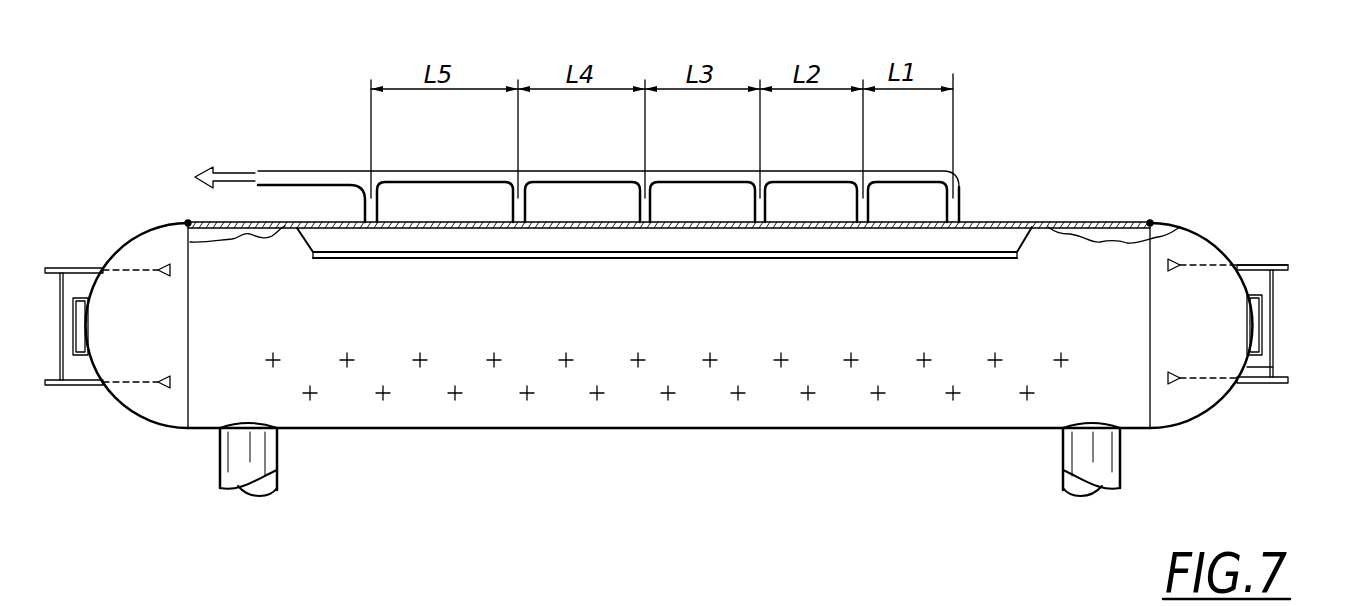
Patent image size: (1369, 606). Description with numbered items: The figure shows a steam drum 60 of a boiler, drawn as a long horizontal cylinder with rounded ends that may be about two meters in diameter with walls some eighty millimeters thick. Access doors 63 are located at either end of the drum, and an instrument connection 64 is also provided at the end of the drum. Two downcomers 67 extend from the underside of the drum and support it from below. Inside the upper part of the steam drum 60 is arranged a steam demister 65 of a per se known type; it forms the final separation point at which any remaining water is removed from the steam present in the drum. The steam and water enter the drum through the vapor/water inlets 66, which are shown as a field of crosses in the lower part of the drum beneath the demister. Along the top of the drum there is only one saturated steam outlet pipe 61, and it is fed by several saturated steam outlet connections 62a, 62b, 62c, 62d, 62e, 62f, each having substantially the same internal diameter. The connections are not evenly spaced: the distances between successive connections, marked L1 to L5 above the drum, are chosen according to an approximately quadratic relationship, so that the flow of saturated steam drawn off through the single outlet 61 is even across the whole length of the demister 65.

The steam drum 60 is at (138, 403).
The steam outlet 61 is at (277, 178).
The saturated steam outlet connection 62a is at (957, 208).
The saturated steam outlet connection 62b is at (864, 208).
The saturated steam outlet connection 62c is at (763, 212).
The saturated steam outlet connection 62d is at (648, 212).
The saturated steam outlet connection 62e is at (522, 212).
The saturated steam outlet connection 62f is at (375, 212).
The access door 63 is at (76, 333).
The instrument connection 64 is at (1288, 265).
The steam demister 65 is at (703, 253).
The vapor/water inlet 66 is at (348, 362).
The downcomer 67 is at (235, 460).